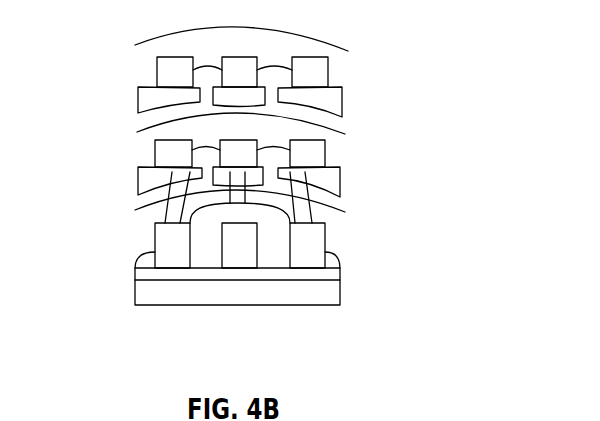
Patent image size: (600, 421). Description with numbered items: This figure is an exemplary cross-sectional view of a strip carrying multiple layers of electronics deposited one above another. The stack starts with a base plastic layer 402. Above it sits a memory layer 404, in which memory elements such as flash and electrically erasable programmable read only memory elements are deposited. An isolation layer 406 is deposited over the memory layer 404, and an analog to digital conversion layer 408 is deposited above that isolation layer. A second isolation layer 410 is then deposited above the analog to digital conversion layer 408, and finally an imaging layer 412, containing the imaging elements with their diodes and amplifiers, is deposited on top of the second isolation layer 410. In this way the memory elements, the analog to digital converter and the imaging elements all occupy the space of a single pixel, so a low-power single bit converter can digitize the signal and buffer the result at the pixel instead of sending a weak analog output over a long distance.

The base plastic layer 402 is at (134, 294).
The memory layer 404 is at (337, 255).
The isolation layer 406 is at (347, 205).
The analog to digital conversion layer 408 is at (343, 158).
The second isolation layer 410 is at (348, 122).
The imaging layer 412 is at (343, 85).